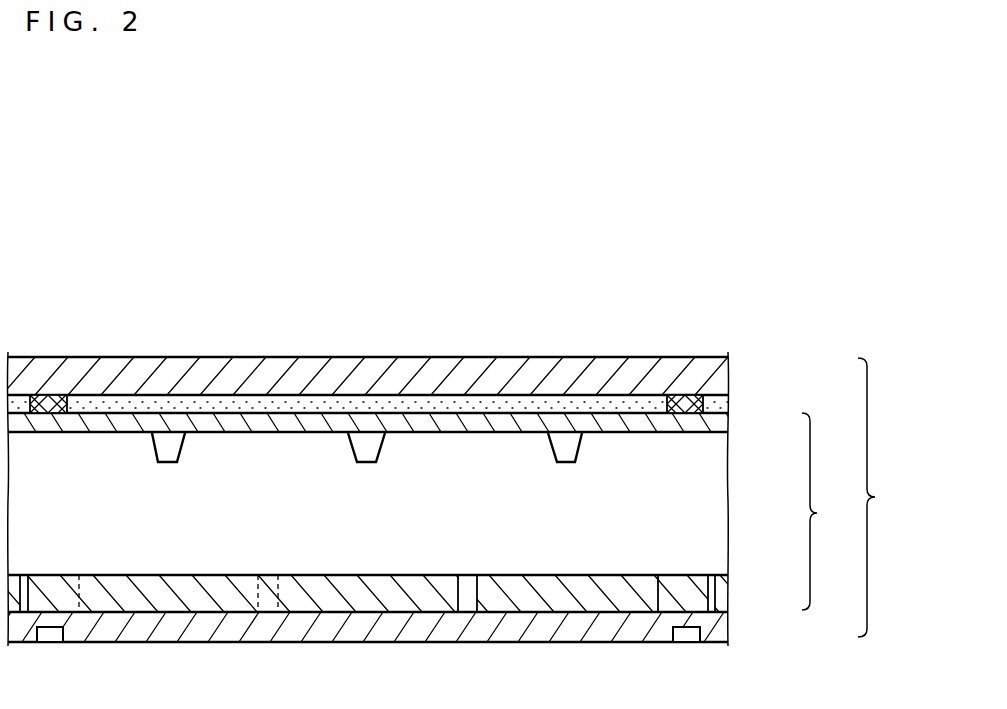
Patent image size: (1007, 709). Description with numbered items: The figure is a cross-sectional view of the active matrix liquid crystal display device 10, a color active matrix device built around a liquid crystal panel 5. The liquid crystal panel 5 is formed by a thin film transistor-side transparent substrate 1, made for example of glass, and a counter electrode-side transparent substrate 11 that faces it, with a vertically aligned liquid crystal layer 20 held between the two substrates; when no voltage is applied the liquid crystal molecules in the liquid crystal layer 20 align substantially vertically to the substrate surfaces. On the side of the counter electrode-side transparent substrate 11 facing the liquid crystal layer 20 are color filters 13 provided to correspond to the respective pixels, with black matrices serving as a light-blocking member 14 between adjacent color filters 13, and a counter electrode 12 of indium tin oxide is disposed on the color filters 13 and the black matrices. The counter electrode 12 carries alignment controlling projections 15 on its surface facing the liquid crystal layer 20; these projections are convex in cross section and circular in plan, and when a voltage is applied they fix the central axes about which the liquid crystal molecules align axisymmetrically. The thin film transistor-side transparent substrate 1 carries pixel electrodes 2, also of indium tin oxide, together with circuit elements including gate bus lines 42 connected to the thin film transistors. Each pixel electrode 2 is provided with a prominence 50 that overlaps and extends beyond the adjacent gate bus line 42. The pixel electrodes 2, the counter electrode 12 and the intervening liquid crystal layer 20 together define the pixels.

The active matrix liquid crystal display device 10 is at (752, 295).
The counter electrode-side transparent substrate 11 is at (716, 376).
The color filters 13 is at (718, 404).
The counter electrode 12 is at (716, 425).
The light-blocking member 14 is at (52, 400).
The alignment controlling projections 15 is at (156, 452).
The pixel electrodes 2 is at (541, 562).
The prominence 50 is at (50, 586).
The thin film transistor-side transparent substrate 1 is at (718, 626).
The gate bus lines 42 is at (50, 644).
The liquid crystal layer 20 is at (828, 511).
The liquid crystal panel 5 is at (877, 497).